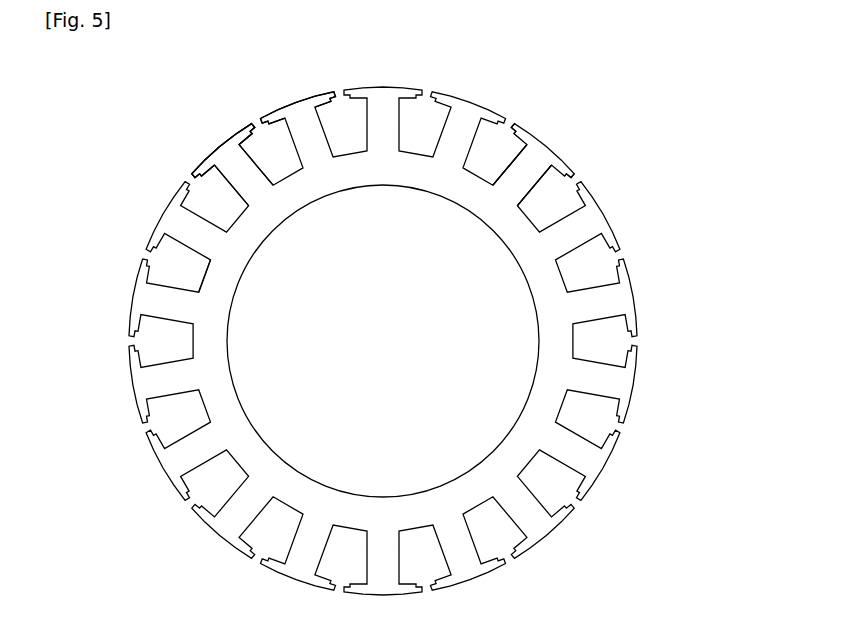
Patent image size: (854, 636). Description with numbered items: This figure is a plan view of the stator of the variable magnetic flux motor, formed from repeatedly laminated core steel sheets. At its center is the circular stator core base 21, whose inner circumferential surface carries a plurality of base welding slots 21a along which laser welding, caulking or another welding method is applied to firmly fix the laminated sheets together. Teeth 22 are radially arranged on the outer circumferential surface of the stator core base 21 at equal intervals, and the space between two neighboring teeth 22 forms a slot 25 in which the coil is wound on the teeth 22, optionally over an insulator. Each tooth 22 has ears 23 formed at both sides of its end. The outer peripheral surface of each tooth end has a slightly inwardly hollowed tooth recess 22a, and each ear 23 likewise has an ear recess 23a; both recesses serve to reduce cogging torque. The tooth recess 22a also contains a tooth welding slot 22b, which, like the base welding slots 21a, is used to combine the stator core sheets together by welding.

The stator core base 21 is at (277, 215).
The base welding slots 21a is at (518, 263).
The teeth 22 is at (237, 178).
The tooth recess 22a is at (553, 150).
The tooth welding slot 22b is at (547, 157).
The ears 23 is at (199, 171).
The ear recess 23a is at (525, 127).
The slot 25 is at (163, 262).